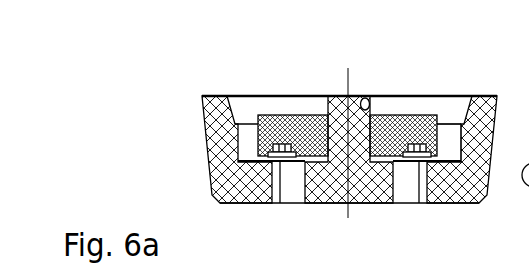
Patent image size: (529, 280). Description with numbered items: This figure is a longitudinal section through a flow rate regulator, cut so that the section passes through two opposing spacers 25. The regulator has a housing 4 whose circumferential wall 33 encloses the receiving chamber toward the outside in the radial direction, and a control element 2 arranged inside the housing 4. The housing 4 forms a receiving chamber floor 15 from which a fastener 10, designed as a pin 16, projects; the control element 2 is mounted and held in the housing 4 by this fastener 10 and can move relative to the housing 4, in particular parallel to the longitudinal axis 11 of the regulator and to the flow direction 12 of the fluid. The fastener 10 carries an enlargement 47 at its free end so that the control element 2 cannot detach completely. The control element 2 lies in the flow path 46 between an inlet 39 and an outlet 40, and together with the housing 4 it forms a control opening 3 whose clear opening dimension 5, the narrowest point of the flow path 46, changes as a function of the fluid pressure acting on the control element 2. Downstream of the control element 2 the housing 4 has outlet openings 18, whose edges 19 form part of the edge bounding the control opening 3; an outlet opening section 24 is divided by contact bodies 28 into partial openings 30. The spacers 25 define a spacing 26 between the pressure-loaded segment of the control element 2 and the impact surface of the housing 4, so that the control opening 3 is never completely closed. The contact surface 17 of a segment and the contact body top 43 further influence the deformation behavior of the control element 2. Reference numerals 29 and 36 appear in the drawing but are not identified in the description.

The control element 2 is at (258, 127).
The control opening 3 is at (453, 104).
The clear opening dimension 5 is at (448, 128).
The housing 4 is at (238, 163).
The fastener 10 is at (348, 110).
The pin 16 is at (348, 110).
The longitudinal axis 11 is at (39, 129).
The flow direction 12 is at (42, 180).
The receiving chamber floor 15 is at (382, 203).
The contact surface 17 is at (306, 104).
The outlet opening 18 is at (307, 211).
The outlet opening section 24 is at (307, 211).
The partial opening 30 is at (291, 186).
The edge of outlet opening 19 is at (440, 159).
The spacer 25 is at (228, 169).
The spacing 26 is at (195, 146).
The contact body 28 is at (303, 192).
The nut 29 is at (303, 192).
The contact body top 43 is at (280, 159).
The circumferential wall 33 is at (207, 114).
The opening 36 is at (429, 208).
The outlet 40 is at (423, 213).
The inlet 39 is at (248, 88).
The flow path 46 is at (239, 104).
The enlargement 47 is at (366, 98).